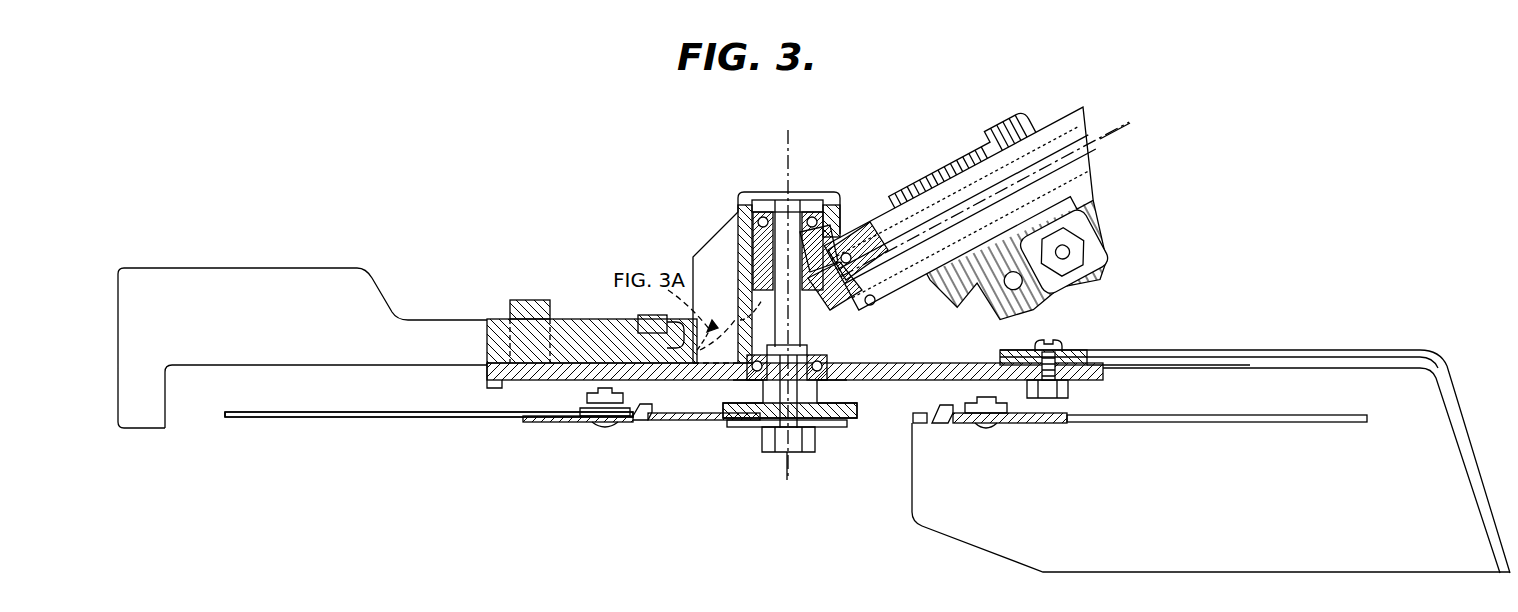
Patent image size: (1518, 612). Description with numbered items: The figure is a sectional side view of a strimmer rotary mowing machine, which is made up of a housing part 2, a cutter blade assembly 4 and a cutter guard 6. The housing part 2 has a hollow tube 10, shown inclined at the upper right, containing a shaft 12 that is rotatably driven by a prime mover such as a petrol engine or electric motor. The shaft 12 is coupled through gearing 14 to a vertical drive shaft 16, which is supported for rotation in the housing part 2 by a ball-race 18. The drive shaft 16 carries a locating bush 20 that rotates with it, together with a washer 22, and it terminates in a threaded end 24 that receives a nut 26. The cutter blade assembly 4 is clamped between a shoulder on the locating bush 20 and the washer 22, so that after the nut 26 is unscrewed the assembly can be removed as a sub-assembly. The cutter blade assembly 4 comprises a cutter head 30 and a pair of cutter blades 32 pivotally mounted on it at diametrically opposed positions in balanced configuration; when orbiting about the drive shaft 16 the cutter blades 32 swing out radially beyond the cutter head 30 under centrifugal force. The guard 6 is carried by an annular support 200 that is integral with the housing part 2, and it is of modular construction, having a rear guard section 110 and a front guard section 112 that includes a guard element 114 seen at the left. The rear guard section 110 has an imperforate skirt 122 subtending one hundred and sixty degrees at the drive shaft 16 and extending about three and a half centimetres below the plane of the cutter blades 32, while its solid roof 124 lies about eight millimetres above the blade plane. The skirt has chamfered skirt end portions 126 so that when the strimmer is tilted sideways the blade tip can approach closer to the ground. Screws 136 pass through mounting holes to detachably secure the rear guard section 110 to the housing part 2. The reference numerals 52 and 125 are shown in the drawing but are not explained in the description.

The housing part 2 is at (1001, 219).
The cutter blade assembly 4 is at (420, 525).
The cutter guard 6 is at (1222, 104).
The hollow tube 10 is at (1001, 228).
The shaft 12 is at (959, 159).
The gearing 14 is at (833, 247).
The drive shaft 16 is at (782, 192).
The ball-race 18 is at (748, 250).
The locating bush 20 is at (720, 410).
The washer 22 is at (735, 428).
The threaded end 24 is at (792, 455).
The nut 26 is at (815, 442).
The cutter head 30 is at (540, 423).
The cutter blades 32 is at (310, 417).
The bracket 52 is at (648, 421).
The rear guard section 110 is at (1232, 166).
The front guard section 112 is at (422, 147).
The guard element 114 is at (278, 268).
The imperforate skirt 122 is at (1452, 382).
The roof 124 is at (1266, 350).
The plate 125 is at (1157, 350).
The chamfered skirt end portions 126 is at (975, 547).
The screws 136 is at (1062, 346).
The annular support 200 is at (495, 365).